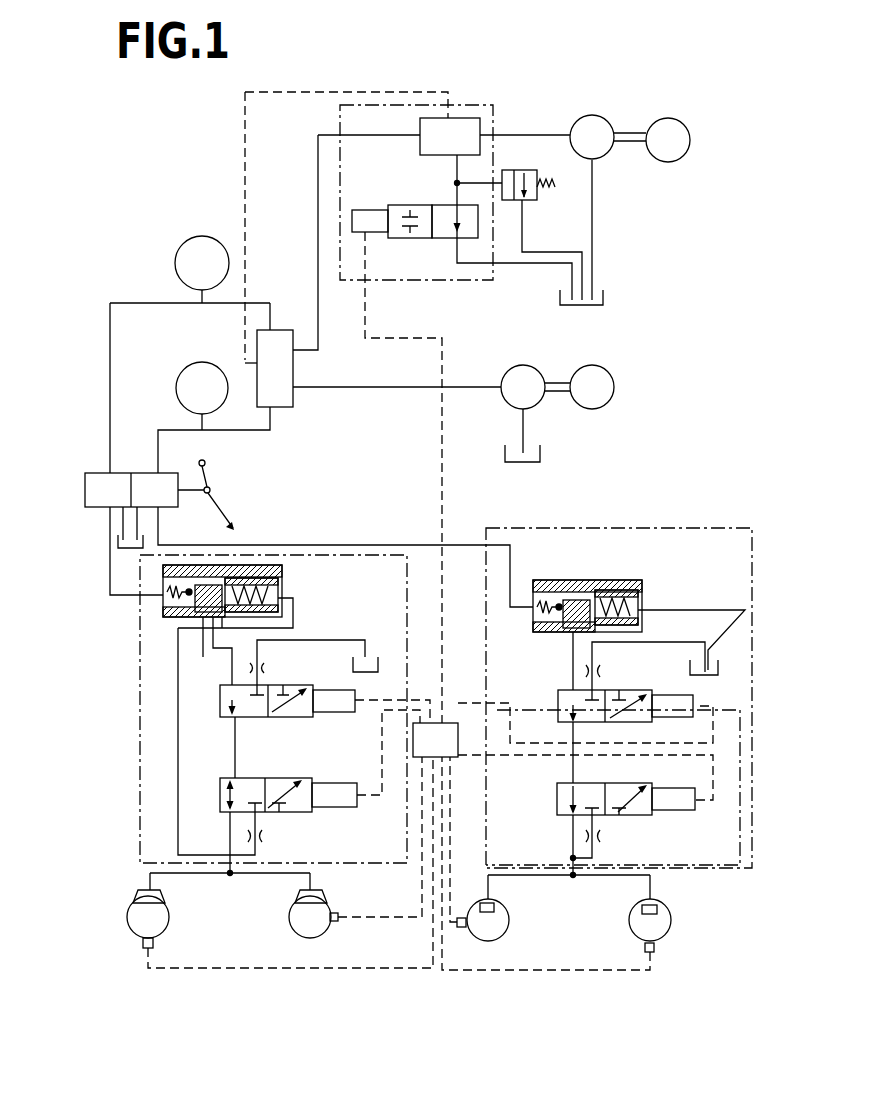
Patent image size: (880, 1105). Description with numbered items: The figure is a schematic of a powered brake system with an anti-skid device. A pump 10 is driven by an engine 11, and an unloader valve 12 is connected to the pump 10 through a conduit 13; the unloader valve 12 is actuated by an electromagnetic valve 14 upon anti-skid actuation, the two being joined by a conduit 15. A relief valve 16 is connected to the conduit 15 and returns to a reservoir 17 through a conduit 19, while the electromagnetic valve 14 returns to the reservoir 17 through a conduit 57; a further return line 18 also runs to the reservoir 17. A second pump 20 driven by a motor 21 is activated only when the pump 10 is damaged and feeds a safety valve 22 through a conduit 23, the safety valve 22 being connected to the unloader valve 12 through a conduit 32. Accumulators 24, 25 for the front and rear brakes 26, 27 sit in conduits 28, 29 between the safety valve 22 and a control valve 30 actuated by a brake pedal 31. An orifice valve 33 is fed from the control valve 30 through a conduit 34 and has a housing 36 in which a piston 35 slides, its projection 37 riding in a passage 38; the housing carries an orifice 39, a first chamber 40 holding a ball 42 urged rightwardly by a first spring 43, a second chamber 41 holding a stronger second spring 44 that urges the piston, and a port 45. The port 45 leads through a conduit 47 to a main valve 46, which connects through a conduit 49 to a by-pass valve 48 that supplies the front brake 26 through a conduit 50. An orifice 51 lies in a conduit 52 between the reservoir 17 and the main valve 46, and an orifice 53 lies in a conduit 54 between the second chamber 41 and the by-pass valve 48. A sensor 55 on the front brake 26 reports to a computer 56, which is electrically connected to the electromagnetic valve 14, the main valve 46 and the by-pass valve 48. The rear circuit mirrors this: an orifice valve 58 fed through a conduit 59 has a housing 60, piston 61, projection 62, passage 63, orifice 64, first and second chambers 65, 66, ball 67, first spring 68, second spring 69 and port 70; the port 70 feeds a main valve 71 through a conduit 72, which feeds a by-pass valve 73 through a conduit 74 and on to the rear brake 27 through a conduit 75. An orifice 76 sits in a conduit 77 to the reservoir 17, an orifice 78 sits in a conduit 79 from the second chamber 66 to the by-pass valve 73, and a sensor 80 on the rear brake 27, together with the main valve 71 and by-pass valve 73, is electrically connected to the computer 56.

The pump 10 is at (592, 120).
The engine 11 is at (668, 119).
The unloader valve 12 is at (465, 130).
The conduit 13 is at (530, 135).
The electromagnetic valve 14 is at (369, 206).
The conduit 15 is at (455, 183).
The relief valve 16 is at (530, 196).
The reservoir 17 is at (604, 297).
The return conduit 18 is at (545, 267).
The conduit 19 is at (593, 213).
The pump 20 is at (528, 373).
The motor 21 is at (593, 372).
The safety valve 22 is at (294, 395).
The conduit 23 is at (382, 387).
The accumulator 24 is at (195, 250).
The accumulator 25 is at (201, 362).
The front brake 26 is at (290, 908).
The rear brake 27 is at (630, 918).
The conduit 28 is at (110, 369).
The conduit 29 is at (158, 428).
The control valve 30 is at (88, 472).
The brake pedal 31 is at (214, 492).
The conduit 32 is at (318, 224).
The orifice valve 33 is at (226, 593).
The conduit 34 is at (110, 578).
The piston 35 is at (246, 566).
The housing 36 is at (262, 566).
The projection 37 is at (203, 646).
The passage 38 is at (206, 567).
The orifice 39 is at (197, 617).
The first chamber 40 is at (180, 608).
The second chamber 41 is at (278, 590).
The ball 42 is at (179, 567).
The first spring 43 is at (167, 597).
The second spring 44 is at (292, 612).
The port 45 is at (230, 672).
The main valve 46 is at (304, 692).
The conduit 47 is at (230, 705).
The by-pass valve 48 is at (297, 777).
The conduit 49 is at (235, 748).
The conduit 50 is at (229, 840).
The orifice 51 is at (262, 662).
The conduit 52 is at (334, 632).
The orifice 53 is at (250, 838).
The conduit 54 is at (179, 761).
The sensor 55 is at (314, 938).
The computer 56 is at (380, 732).
The conduit 57 is at (567, 264).
The orifice valve 58 is at (672, 575).
The conduit 59 is at (375, 545).
The housing 60 is at (599, 604).
The piston 61 is at (638, 592).
The projection 62 is at (590, 582).
The passage 63 is at (572, 556).
The orifice 64 is at (572, 671).
The first chamber 65 is at (546, 625).
The second chamber 66 is at (637, 600).
The ball 67 is at (545, 582).
The first spring 68 is at (537, 610).
The second spring 69 is at (648, 618).
The port 70 is at (583, 628).
The main valve 71 is at (639, 700).
The conduit 72 is at (566, 704).
The by-pass valve 73 is at (672, 816).
The conduit 74 is at (572, 774).
The conduit 75 is at (572, 840).
The orifice 76 is at (596, 662).
The conduit 77 is at (746, 618).
The orifice 78 is at (600, 840).
The conduit 79 is at (742, 846).
The sensor 80 is at (645, 944).